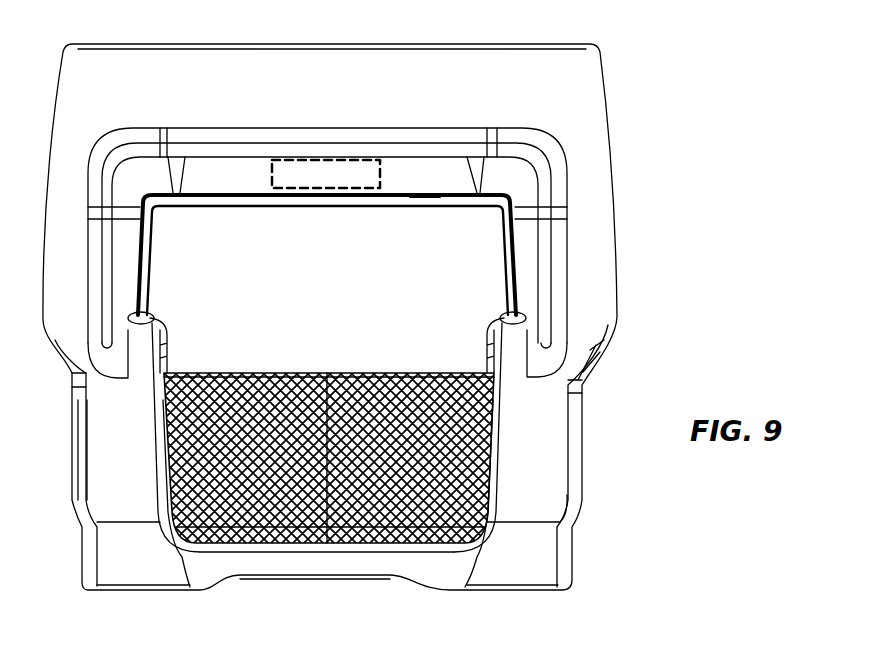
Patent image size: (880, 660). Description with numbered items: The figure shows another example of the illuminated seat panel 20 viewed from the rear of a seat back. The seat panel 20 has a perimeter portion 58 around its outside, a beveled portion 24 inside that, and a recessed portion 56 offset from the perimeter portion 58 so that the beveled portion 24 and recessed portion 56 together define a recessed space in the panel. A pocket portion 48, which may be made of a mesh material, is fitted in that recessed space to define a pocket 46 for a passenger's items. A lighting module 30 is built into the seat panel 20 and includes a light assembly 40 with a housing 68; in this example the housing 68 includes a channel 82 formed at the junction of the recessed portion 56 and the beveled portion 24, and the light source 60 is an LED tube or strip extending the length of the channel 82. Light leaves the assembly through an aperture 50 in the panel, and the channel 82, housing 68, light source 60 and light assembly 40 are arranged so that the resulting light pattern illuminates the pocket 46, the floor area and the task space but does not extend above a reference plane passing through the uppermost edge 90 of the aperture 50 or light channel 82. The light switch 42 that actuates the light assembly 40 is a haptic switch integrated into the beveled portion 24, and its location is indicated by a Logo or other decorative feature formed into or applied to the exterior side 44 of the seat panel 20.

The seat panel 20 is at (646, 139).
The beveled portion 24 is at (224, 167).
The lighting module 30 is at (344, 110).
The light assembly 40 is at (338, 222).
The light switch 42 is at (352, 157).
The exterior side of seat panel 44 is at (600, 287).
The pocket 46 is at (366, 350).
The pocket portion 48 is at (312, 362).
The aperture 50 is at (232, 205).
The recessed portion 56 is at (488, 232).
The perimeter portion 58 is at (86, 98).
The light source 60 is at (423, 200).
The housing 68 is at (150, 244).
The channel 82 is at (388, 206).
The uppermost edge of aperture 90 is at (258, 194).